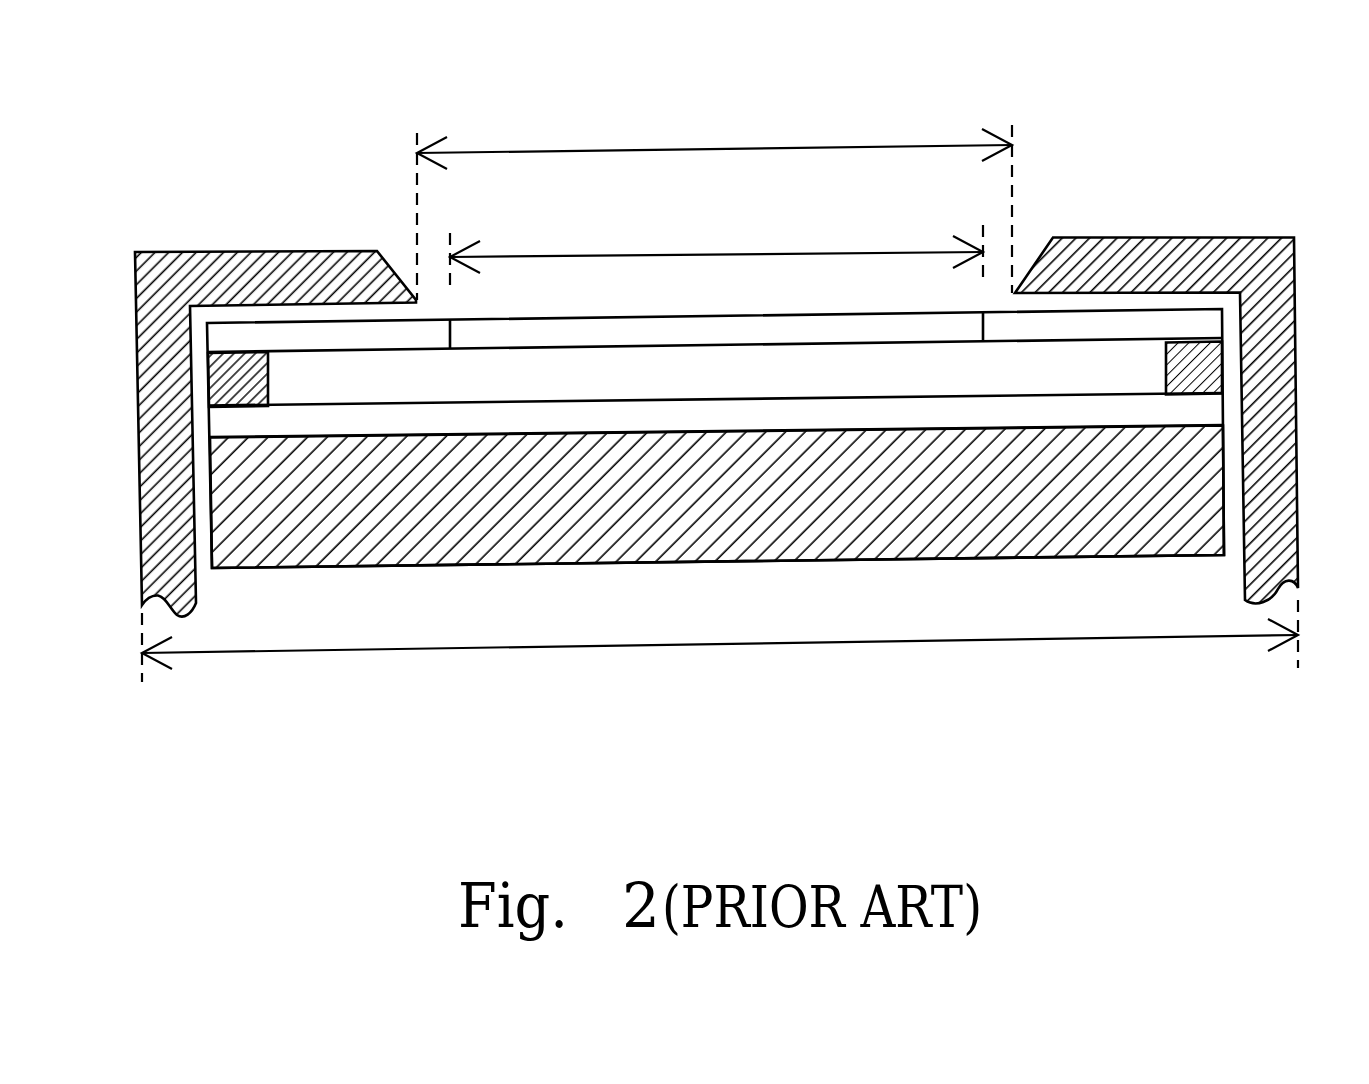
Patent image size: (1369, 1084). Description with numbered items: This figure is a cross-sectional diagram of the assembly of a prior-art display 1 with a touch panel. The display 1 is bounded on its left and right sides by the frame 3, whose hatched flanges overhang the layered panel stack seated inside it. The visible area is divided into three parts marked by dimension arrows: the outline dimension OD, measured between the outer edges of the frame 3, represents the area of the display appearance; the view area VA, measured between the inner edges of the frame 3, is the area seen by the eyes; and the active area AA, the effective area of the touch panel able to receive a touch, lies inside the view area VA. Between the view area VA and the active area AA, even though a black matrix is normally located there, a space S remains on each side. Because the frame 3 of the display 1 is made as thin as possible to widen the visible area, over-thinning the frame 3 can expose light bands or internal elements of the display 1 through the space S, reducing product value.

The display 1 is at (238, 190).
The frame 3 is at (1180, 267).
The space S is at (435, 258).
The view area VA is at (714, 203).
The active area AA is at (716, 249).
The outline dimension OD is at (720, 650).